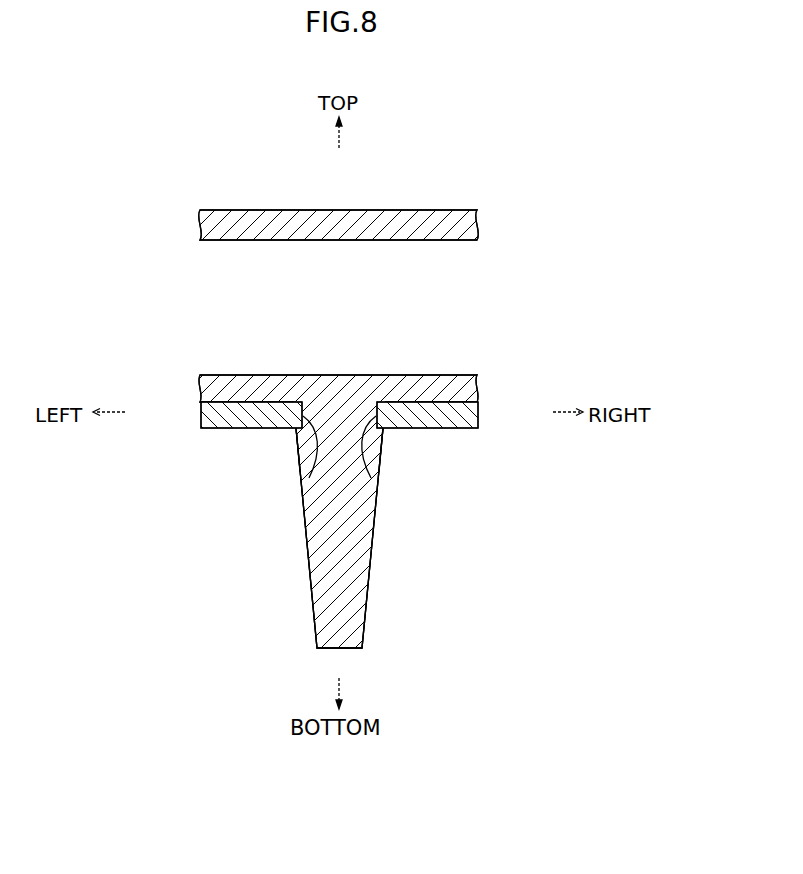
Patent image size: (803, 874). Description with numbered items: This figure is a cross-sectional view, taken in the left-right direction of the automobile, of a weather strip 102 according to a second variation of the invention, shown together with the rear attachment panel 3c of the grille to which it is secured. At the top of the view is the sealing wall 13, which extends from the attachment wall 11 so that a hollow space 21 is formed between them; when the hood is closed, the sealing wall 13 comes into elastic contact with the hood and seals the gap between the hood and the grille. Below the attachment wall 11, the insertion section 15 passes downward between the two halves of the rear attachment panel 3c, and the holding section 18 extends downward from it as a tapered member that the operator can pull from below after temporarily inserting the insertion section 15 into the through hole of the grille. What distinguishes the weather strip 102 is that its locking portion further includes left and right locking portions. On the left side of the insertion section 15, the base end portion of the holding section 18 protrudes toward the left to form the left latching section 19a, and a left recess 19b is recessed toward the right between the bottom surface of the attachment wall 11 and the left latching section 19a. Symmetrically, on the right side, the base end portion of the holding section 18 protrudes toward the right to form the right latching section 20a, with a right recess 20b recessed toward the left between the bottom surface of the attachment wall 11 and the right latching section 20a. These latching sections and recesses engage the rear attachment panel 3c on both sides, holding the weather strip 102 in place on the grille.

The sealing wall 13 is at (423, 209).
The weather strip 102 is at (584, 248).
The hollow space 21 is at (433, 307).
The attachment wall 11 is at (440, 375).
The holding section 18 is at (369, 577).
The rear attachment panel 3c is at (238, 428).
The left latching section 19a is at (295, 433).
The left recess 19b is at (300, 472).
The right latching section 20a is at (384, 435).
The right recess 20b is at (381, 472).
The insertion section 15 is at (233, 567).